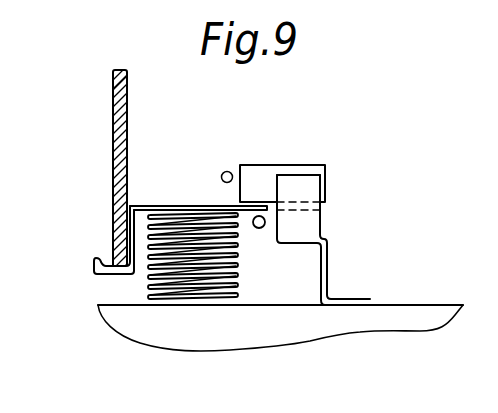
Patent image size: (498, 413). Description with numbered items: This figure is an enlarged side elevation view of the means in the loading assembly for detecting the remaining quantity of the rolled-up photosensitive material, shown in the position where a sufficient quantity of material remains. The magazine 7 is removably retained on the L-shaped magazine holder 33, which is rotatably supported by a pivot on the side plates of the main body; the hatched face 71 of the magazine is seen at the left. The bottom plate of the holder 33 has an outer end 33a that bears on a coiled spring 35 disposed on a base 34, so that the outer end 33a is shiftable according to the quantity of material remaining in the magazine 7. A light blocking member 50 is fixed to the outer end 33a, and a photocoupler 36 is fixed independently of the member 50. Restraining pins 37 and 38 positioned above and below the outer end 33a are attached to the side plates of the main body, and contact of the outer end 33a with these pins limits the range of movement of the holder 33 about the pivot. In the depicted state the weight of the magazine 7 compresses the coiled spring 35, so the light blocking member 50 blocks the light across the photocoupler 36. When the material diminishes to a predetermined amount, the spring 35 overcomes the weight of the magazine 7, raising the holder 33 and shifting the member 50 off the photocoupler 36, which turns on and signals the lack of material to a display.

The magazine 7 is at (130, 87).
The hatched surface of plate 71 is at (121, 111).
The magazine holder 33 is at (112, 274).
The outer end 33a is at (173, 210).
The base 34 is at (180, 340).
The coiled spring 35 is at (237, 278).
The photocoupler 36 is at (312, 228).
The restraining pin 37 is at (226, 171).
The restraining pin 38 is at (259, 229).
The light blocking member 50 is at (302, 166).